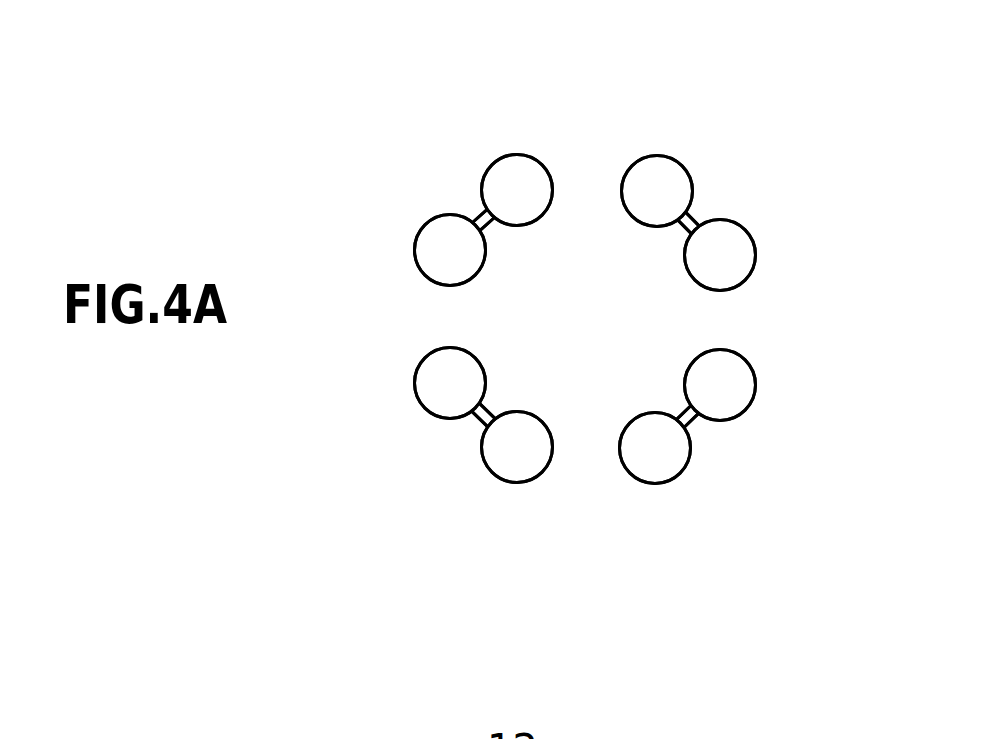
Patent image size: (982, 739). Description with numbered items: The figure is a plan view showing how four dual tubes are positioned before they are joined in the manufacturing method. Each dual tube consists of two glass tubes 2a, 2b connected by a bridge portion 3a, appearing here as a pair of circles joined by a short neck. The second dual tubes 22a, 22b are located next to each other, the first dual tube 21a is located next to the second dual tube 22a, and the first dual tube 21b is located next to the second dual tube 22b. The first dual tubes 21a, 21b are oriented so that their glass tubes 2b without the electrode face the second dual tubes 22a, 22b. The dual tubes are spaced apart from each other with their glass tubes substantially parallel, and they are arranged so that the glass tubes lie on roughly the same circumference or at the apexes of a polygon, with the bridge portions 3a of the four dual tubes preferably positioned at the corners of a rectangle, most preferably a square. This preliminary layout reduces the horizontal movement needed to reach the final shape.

The glass tube 2a is at (745, 248).
The glass tube without the electrode 2b is at (510, 163).
The bridge portion 3a is at (477, 213).
The first dual tube 21a is at (728, 117).
The first dual tube 21b is at (725, 503).
The second dual tube 22a is at (457, 133).
The second dual tube 22b is at (443, 488).